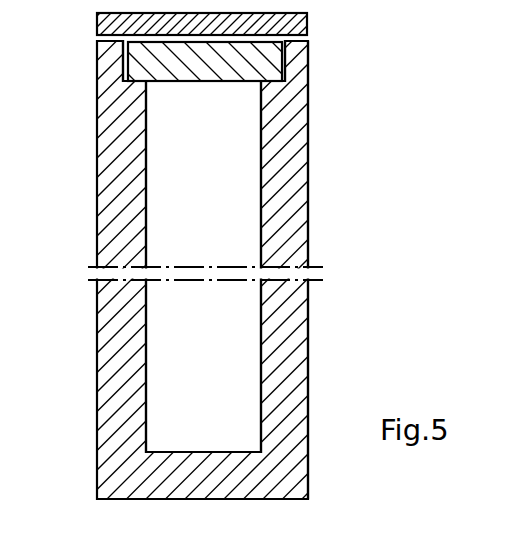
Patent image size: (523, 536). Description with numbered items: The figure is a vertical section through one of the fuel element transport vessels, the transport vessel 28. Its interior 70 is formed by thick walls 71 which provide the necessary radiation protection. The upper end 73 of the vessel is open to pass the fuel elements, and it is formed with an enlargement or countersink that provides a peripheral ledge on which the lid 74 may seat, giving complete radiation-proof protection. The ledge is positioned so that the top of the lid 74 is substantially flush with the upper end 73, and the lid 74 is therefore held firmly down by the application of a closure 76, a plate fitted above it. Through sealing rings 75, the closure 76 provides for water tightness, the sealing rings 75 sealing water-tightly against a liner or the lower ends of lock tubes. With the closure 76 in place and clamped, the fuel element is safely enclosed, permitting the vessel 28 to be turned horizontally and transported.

The walls 71 is at (104, 217).
The transport vessel 28 is at (308, 187).
The interior 70 is at (247, 230).
The sealing rings 75 is at (108, 47).
The lid 74 is at (266, 66).
The upper end 73 is at (298, 62).
The closure 76 is at (298, 25).